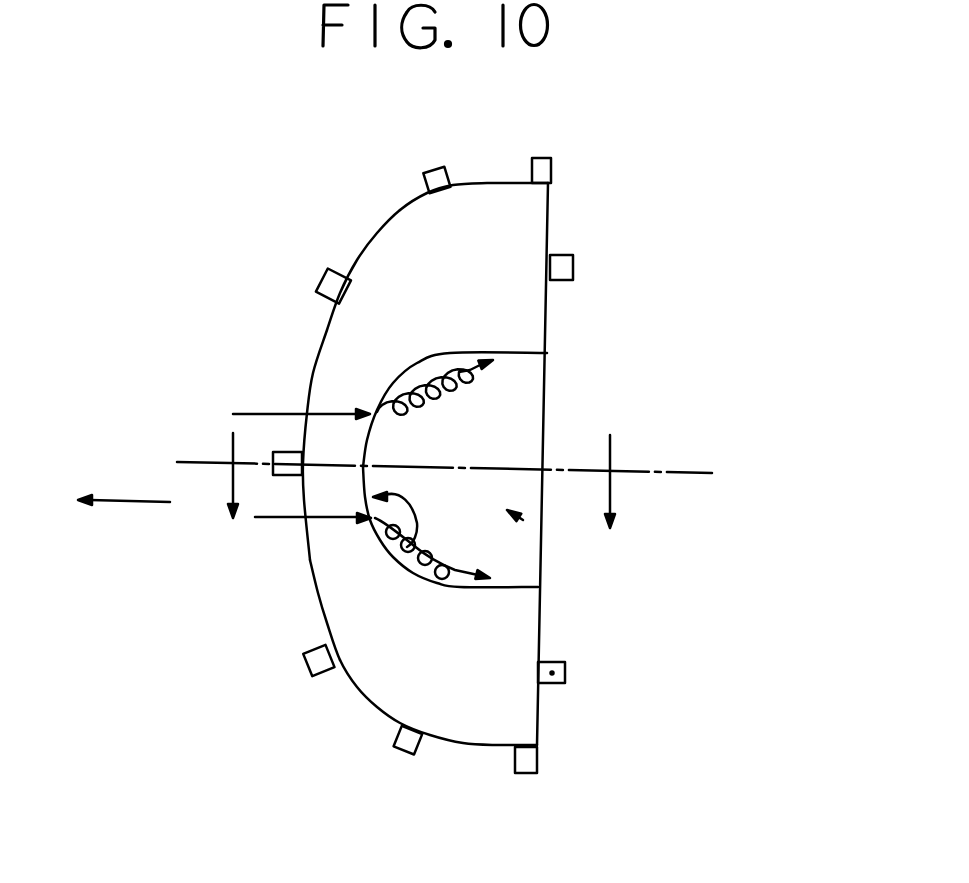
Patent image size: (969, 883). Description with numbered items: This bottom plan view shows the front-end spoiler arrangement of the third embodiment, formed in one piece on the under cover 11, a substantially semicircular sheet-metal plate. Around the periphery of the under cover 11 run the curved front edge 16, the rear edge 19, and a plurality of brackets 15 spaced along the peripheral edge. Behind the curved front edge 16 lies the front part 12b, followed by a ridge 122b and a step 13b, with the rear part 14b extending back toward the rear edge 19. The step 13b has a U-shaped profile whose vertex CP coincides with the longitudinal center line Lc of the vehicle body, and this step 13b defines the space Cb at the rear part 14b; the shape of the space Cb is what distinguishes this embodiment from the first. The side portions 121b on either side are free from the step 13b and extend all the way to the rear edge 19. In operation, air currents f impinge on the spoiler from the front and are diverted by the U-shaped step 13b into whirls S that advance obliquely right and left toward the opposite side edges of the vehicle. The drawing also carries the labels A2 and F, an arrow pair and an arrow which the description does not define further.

The under cover 11 is at (440, 451).
The side portions 121b is at (517, 220).
The front part 12b is at (335, 355).
The curved front edge 16 is at (313, 592).
The ridge 122b is at (375, 520).
The brackets 15 is at (573, 268).
The rear edge 19 is at (542, 638).
The rear part 14b is at (523, 385).
The step 13b is at (450, 553).
The vertex CP is at (364, 463).
The whirls S is at (463, 517).
The longitudinal center line Lc is at (205, 455).
The air currents f is at (268, 410).
The section arrows A2 is at (419, 505).
The force direction F is at (135, 505).
The space Cb is at (523, 520).